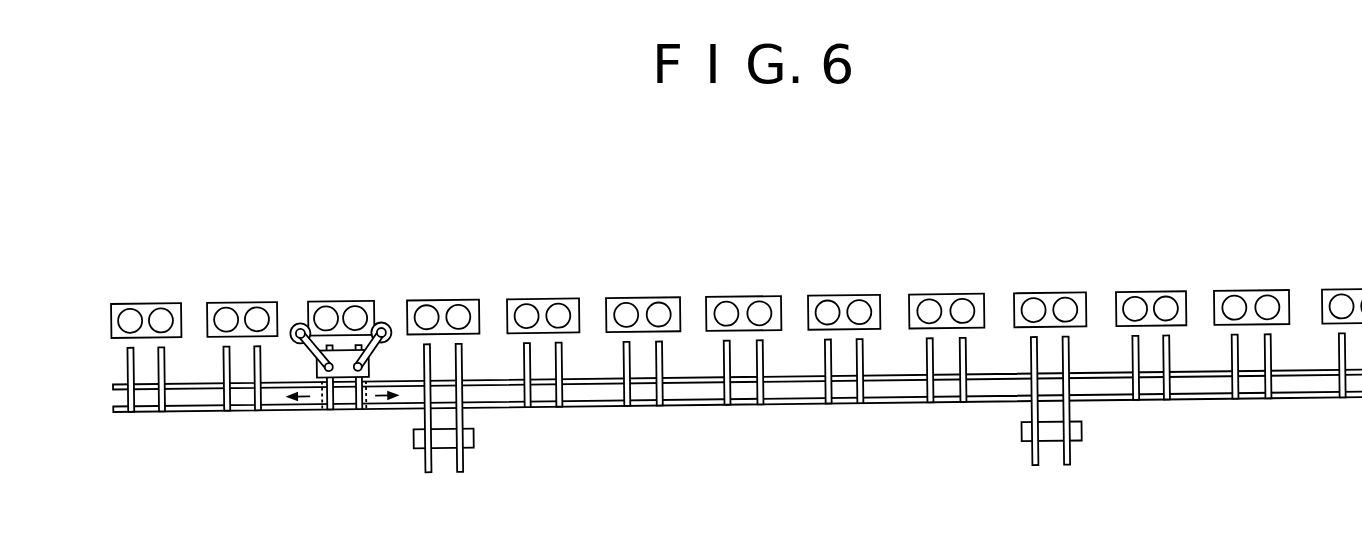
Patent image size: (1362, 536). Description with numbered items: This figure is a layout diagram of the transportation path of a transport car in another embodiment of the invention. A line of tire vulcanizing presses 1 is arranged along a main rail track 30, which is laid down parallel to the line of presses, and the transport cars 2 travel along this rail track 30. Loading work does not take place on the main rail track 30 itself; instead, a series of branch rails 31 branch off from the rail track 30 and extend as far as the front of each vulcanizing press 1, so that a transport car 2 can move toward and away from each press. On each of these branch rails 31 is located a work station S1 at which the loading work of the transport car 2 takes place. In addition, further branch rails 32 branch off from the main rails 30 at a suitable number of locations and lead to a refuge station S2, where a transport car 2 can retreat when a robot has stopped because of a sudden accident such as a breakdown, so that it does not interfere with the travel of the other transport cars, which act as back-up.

The tire vulcanizing press 1 is at (537, 299).
The transport car 2 is at (321, 399).
The rail track 30 is at (1317, 378).
The branch rails 31 is at (1237, 349).
The branch rails 32 is at (1075, 412).
The work station S1 is at (371, 377).
The refuge station S2 is at (473, 437).